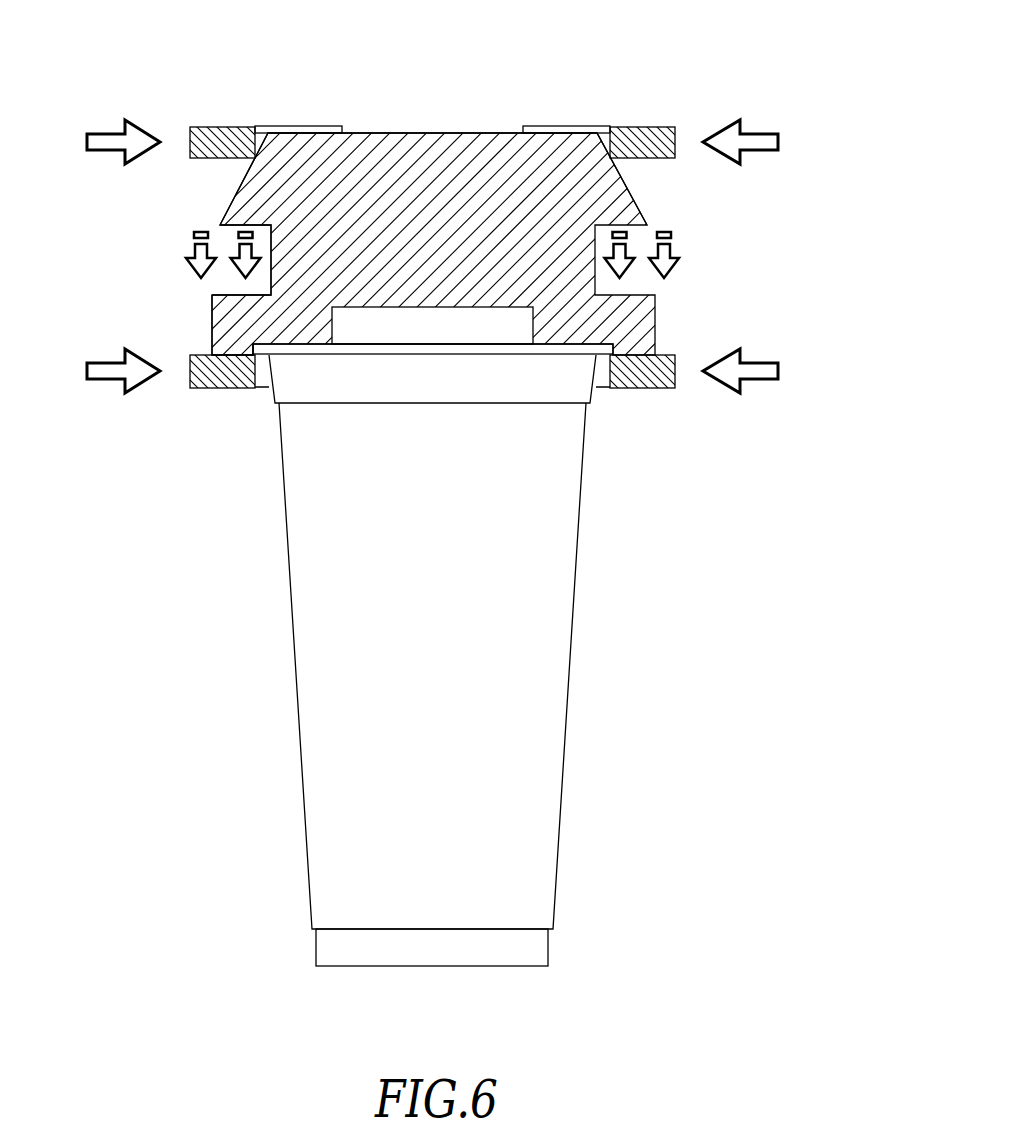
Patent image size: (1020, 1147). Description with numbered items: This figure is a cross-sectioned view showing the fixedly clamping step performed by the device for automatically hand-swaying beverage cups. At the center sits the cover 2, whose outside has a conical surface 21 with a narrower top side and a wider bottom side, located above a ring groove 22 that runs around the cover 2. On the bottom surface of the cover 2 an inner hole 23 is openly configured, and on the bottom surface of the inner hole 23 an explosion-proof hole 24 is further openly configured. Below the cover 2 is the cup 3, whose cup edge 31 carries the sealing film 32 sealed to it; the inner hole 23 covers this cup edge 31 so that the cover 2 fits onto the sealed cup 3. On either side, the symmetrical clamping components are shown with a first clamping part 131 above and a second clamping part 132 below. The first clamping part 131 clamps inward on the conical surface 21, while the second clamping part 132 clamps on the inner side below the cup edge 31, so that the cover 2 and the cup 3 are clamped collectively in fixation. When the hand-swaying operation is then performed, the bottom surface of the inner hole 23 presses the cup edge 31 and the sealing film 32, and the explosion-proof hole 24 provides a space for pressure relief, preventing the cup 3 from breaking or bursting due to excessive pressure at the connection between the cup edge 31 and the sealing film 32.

The cover 2 is at (495, 133).
The conical surface 21 is at (238, 189).
The ring groove 22 is at (271, 285).
The inner hole 23 is at (256, 356).
The explosion-proof hole 24 is at (373, 307).
The cup 3 is at (572, 641).
The cup edge 31 is at (548, 355).
The sealing film 32 is at (453, 345).
The first clamping part 131 is at (637, 127).
The second clamping part 132 is at (663, 355).